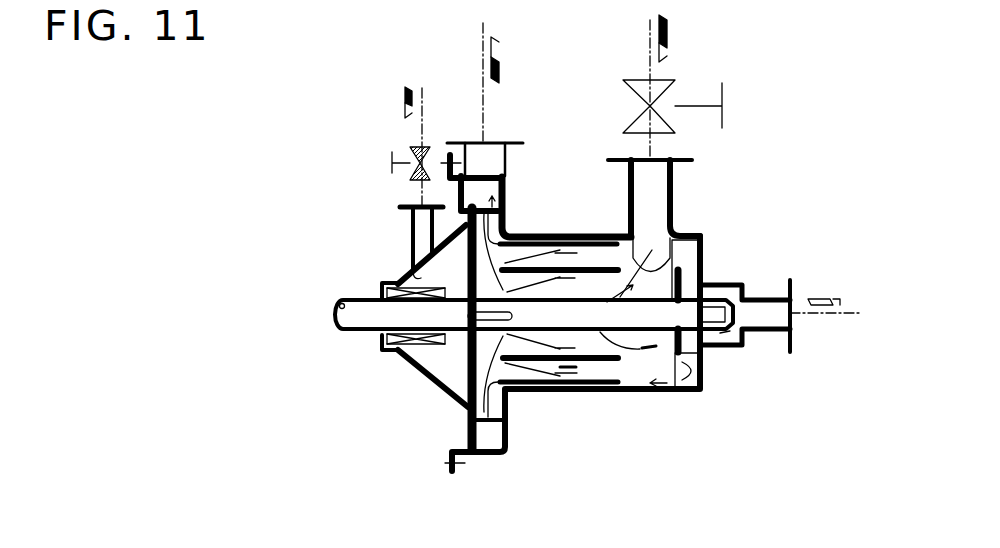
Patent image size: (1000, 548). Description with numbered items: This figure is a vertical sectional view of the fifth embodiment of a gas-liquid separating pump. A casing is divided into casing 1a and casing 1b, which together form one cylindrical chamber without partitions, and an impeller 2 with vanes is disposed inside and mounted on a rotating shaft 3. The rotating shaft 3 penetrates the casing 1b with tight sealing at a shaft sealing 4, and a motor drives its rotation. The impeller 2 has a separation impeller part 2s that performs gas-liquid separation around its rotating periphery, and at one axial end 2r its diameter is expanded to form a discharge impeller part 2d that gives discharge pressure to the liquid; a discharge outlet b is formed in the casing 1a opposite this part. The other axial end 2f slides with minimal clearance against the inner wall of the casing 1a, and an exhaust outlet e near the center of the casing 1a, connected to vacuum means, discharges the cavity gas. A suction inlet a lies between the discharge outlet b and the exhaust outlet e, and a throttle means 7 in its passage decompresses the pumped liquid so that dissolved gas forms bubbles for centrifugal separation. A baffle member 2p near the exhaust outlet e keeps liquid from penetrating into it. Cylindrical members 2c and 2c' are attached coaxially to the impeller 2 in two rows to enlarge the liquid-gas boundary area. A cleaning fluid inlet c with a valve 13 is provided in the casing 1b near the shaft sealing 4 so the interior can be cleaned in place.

The impeller 2 is at (538, 377).
The cylindrical member 2c is at (582, 404).
The cylindrical member (second row) 2c' is at (606, 375).
The discharge impeller part 2d is at (490, 407).
The other axial end of impeller 2f is at (778, 352).
The baffle member 2p is at (700, 258).
The one axial end of impeller 2r is at (463, 386).
The separation impeller part 2s is at (568, 367).
The casing 1a is at (682, 375).
The casing 1b is at (430, 348).
The rotating shaft 3 is at (423, 315).
The shaft sealing 4 is at (420, 232).
The throttle means 7 is at (688, 105).
The valve 13 is at (407, 162).
The suction inlet a is at (660, 187).
The discharge outlet b is at (490, 155).
The cleaning fluid inlet c is at (415, 283).
The exhaust outlet e is at (765, 305).